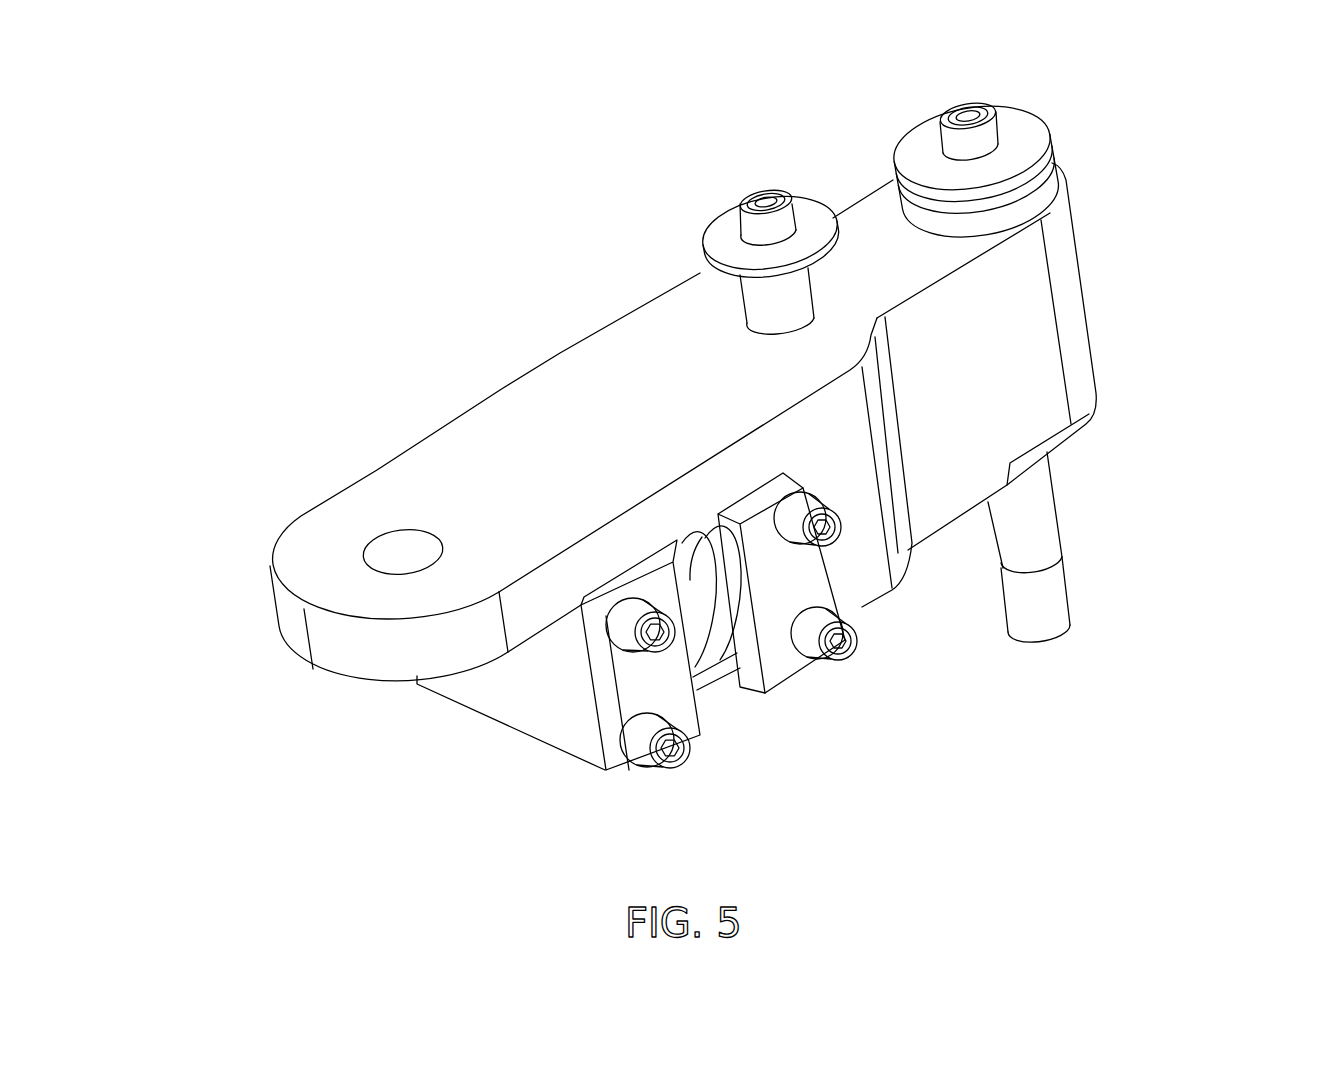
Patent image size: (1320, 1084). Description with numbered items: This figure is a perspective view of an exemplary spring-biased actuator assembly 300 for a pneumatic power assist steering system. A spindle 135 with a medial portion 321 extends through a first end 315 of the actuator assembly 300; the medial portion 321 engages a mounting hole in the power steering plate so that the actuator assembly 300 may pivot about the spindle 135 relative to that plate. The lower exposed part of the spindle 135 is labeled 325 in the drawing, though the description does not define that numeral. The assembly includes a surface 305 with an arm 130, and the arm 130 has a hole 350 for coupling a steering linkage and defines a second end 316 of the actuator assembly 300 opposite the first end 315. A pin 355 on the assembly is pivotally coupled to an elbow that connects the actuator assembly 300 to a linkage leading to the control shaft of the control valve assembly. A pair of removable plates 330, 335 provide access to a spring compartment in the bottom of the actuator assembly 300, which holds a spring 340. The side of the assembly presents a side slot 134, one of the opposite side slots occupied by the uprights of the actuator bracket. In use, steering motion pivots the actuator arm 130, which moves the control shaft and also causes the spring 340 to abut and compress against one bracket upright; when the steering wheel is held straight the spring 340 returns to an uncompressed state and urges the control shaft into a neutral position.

The arm 130 is at (317, 570).
The side slot 134 is at (705, 523).
The spindle 135 is at (997, 133).
The actuator assembly 300 is at (540, 353).
The surface 305 is at (500, 403).
The first end 315 is at (1070, 310).
The second end 316 is at (502, 680).
The medial portion 321 is at (1045, 520).
The pin tip 325 is at (1050, 605).
The removable plate 330 is at (660, 687).
The removable plate 335 is at (800, 580).
The spring 340 is at (713, 688).
The hole 350 is at (402, 550).
The pin 355 is at (748, 294).